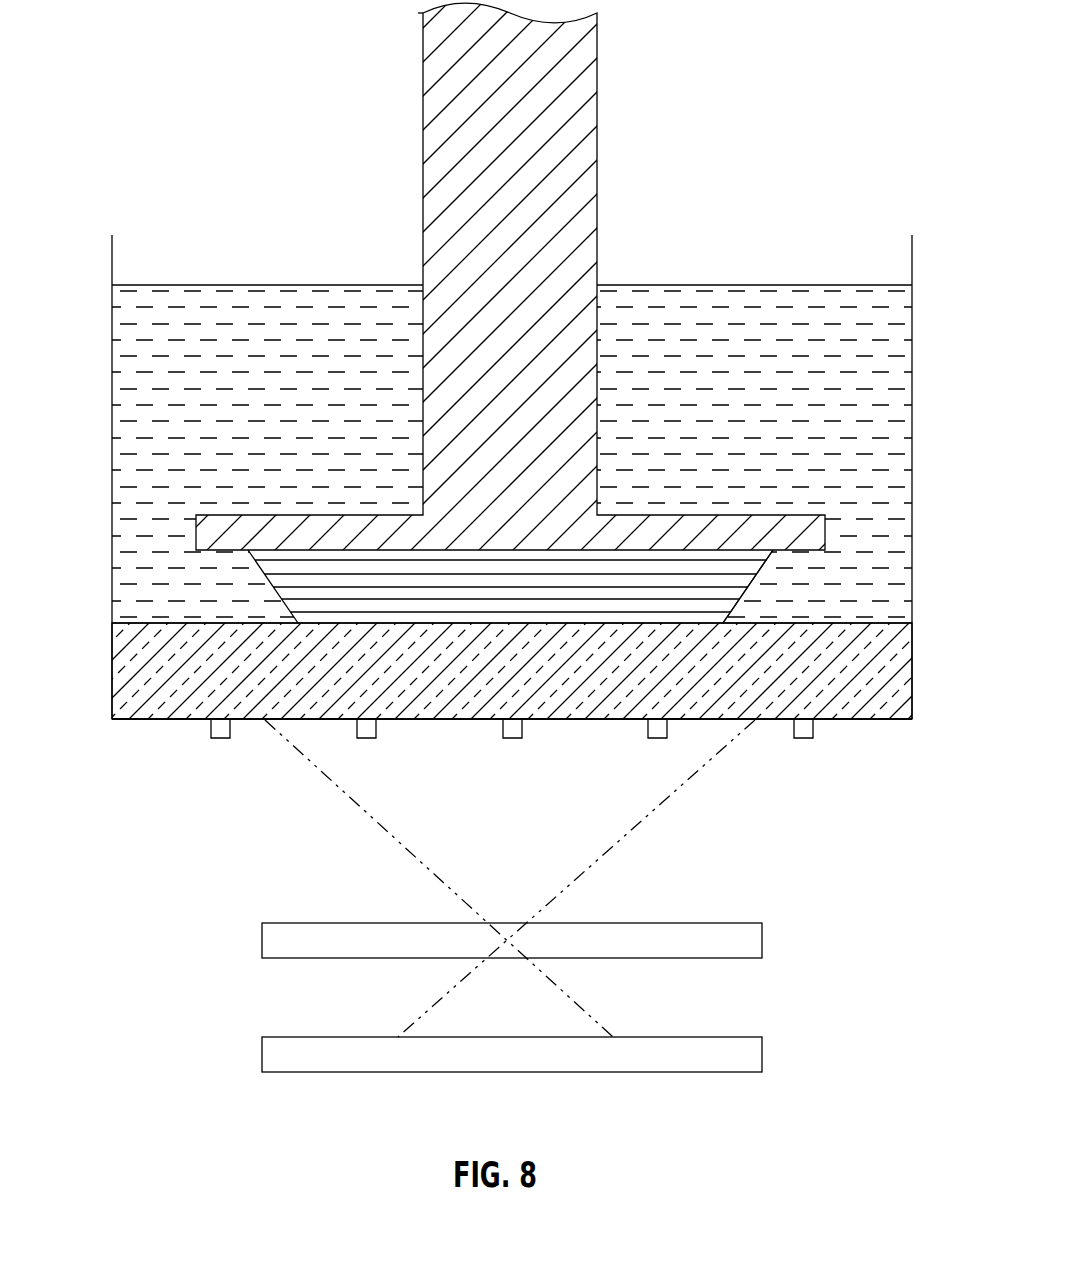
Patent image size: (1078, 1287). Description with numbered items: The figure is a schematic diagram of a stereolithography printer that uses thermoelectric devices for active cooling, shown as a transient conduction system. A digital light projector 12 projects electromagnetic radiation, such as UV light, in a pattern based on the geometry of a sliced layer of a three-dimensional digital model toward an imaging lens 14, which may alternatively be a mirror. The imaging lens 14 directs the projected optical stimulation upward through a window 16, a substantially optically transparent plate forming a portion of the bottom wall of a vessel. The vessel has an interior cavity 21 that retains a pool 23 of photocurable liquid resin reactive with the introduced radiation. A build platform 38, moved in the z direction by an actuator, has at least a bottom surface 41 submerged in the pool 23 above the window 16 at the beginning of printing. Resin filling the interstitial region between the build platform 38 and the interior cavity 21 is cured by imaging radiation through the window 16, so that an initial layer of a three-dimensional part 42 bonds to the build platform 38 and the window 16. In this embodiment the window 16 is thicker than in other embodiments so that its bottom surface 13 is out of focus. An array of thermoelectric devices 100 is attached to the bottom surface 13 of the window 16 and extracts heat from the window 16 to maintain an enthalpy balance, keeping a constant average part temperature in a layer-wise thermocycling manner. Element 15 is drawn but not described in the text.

The digital light projector 12 is at (762, 1055).
The imaging lens 14 is at (762, 940).
The bottom surface 13 is at (135, 720).
The build surface interface 15 is at (137, 621).
The window 16 is at (117, 677).
The interior cavity 21 is at (112, 404).
The pool 23 is at (128, 337).
The build platform 38 is at (813, 515).
The bottom surface 41 is at (798, 550).
The 3D part 42 is at (688, 615).
The thermoelectric devices 100 is at (220, 738).